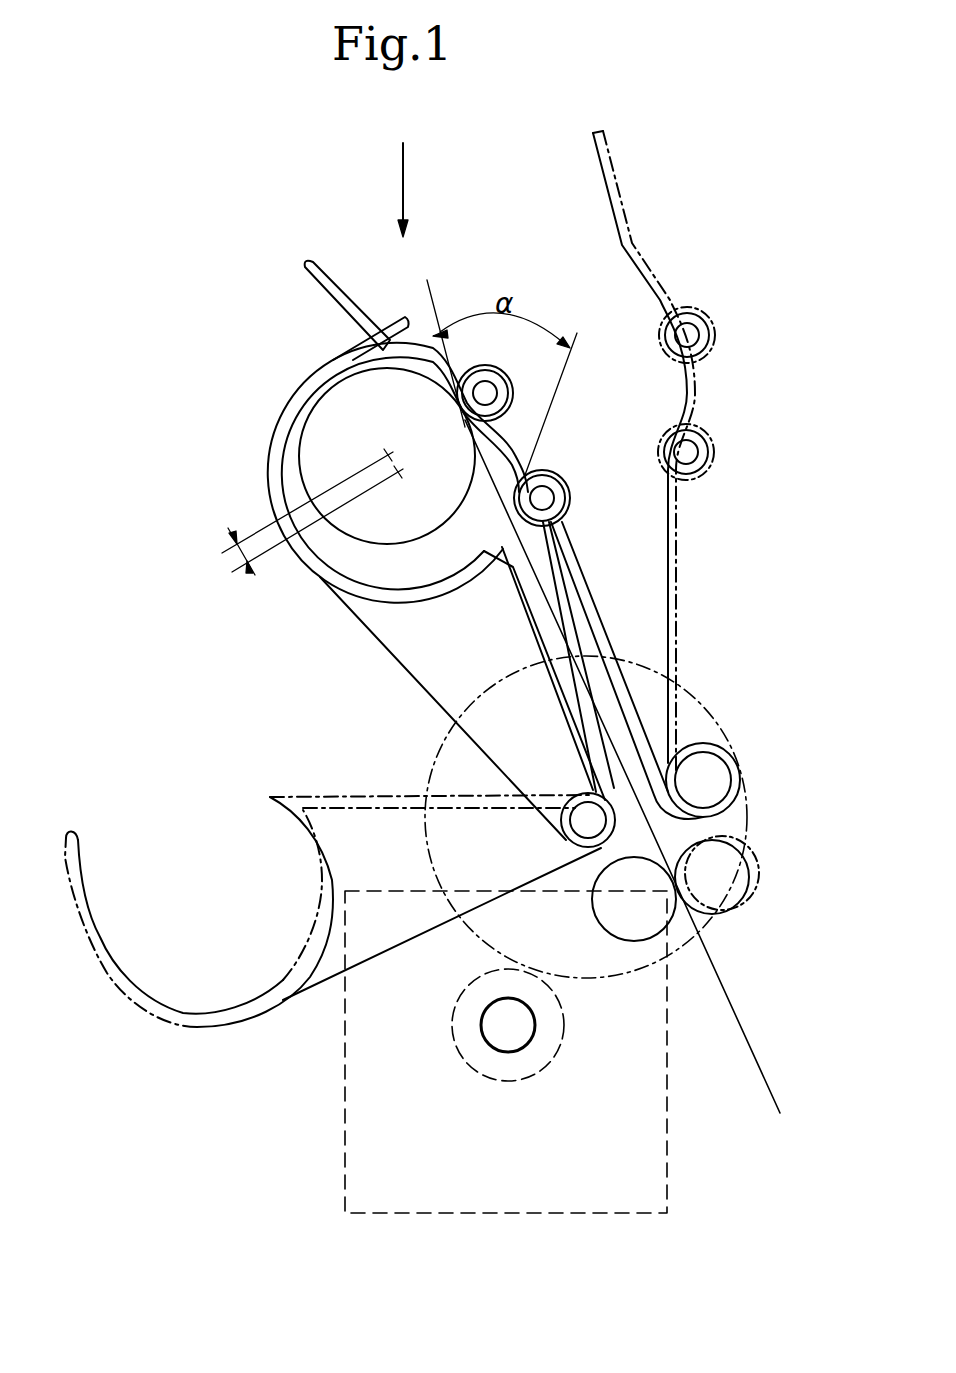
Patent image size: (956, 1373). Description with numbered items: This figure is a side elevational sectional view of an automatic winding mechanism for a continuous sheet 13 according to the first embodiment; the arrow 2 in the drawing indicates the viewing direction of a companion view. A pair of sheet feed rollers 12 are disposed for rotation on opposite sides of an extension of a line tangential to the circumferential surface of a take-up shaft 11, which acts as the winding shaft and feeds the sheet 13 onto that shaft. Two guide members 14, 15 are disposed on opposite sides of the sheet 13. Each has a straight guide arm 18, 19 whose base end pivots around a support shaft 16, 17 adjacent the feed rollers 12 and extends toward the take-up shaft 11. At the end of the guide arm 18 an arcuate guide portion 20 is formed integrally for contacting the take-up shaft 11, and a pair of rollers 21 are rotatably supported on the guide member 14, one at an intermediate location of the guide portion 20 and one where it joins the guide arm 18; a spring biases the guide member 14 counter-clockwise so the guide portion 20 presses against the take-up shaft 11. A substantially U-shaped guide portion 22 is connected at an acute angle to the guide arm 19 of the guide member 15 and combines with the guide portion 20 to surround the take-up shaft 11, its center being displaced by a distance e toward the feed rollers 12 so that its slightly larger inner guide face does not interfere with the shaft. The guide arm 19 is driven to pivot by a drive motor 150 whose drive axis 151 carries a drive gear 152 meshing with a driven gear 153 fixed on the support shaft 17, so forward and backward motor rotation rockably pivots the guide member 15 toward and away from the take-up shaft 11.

The sheet feed direction arrow 2 is at (411, 187).
The take-up shaft 11 is at (345, 395).
The sheet feed rollers 12 is at (707, 907).
The continuous sheet 13 is at (740, 1063).
The guide member 14 is at (357, 268).
The guide member 15 is at (256, 401).
The support shaft 16 is at (712, 785).
The support shaft 17 is at (583, 823).
The guide arm 18 is at (594, 606).
The guide arm 19 is at (544, 679).
The guide portion 20 is at (421, 333).
The rollers 21 is at (512, 398).
The guide portion 22 is at (260, 473).
The drive motor 150 is at (667, 1115).
The drive axis 151 is at (490, 1025).
The drive gear 152 is at (470, 1062).
The driven gear 153 is at (712, 705).